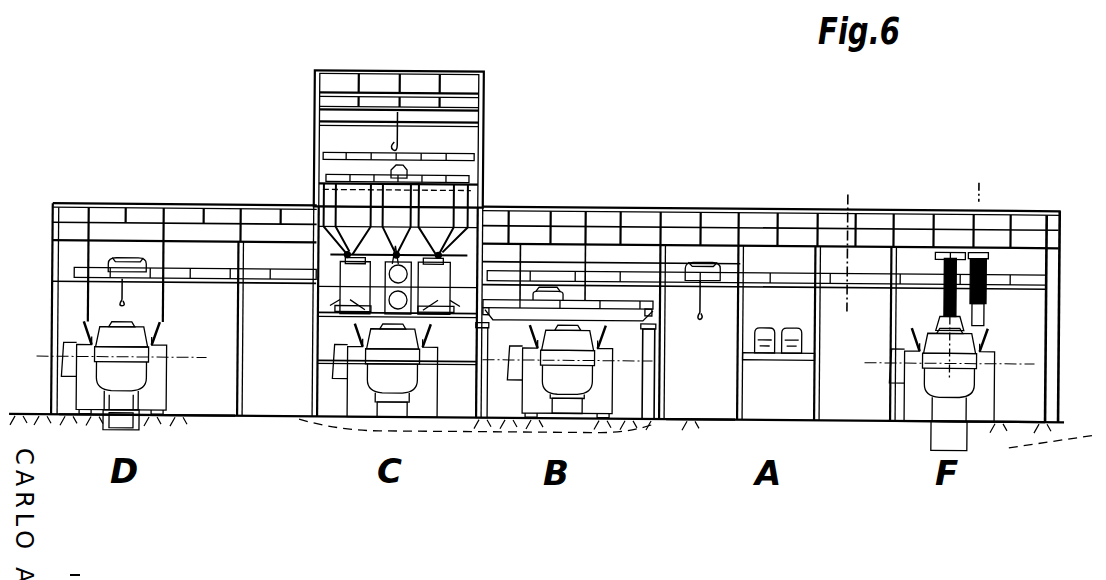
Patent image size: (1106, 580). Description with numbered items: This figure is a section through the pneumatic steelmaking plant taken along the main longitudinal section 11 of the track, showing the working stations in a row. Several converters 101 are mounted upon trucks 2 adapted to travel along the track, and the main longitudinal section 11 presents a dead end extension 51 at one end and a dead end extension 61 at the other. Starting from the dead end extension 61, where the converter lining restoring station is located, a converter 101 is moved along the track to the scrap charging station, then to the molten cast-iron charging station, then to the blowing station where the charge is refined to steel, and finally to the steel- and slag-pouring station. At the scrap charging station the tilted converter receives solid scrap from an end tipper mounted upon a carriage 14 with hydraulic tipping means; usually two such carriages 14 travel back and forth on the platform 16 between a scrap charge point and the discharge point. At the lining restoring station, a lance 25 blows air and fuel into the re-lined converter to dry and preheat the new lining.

The converter 101 is at (125, 326).
The truck 2 is at (166, 392).
The main longitudinal section 11 is at (711, 420).
The carriage 14 is at (753, 346).
The platform 16 is at (777, 360).
The lance 25 is at (950, 307).
The dead end extension 51 is at (207, 430).
The dead end extension 61 is at (1028, 435).